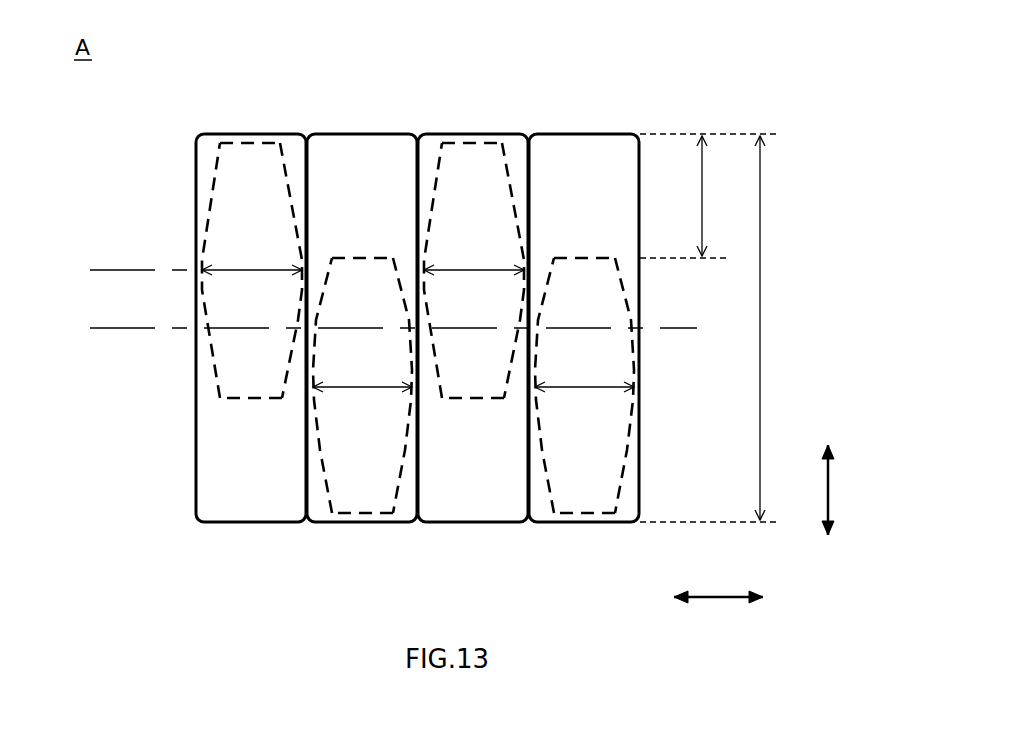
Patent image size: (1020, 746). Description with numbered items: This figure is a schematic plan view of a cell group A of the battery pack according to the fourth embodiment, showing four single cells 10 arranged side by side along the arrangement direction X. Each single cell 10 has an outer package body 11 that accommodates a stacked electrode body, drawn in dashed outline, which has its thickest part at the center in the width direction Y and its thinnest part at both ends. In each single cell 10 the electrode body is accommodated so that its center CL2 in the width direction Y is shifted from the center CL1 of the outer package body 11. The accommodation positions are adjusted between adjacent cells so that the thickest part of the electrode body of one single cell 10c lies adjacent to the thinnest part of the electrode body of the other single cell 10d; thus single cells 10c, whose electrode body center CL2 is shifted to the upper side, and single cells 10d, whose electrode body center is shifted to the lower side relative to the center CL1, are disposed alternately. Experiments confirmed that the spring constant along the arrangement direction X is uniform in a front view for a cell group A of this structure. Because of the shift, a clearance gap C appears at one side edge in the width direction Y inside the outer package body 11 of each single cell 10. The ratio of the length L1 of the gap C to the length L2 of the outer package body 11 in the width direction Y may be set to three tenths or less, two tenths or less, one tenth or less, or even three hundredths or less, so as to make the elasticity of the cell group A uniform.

The single cell 10 is at (368, 315).
The single cell 10c is at (312, 295).
The single cell 10d is at (469, 333).
The outer package body 11 is at (260, 523).
The clearance gap C is at (366, 186).
The center of the outer package body CL1 is at (366, 328).
The center of the stacked electrode body CL2 is at (111, 270).
The length of the gap L1 is at (718, 196).
The length of the outer package body L2 is at (777, 328).
The arrangement direction X is at (718, 617).
The width direction Y is at (845, 490).